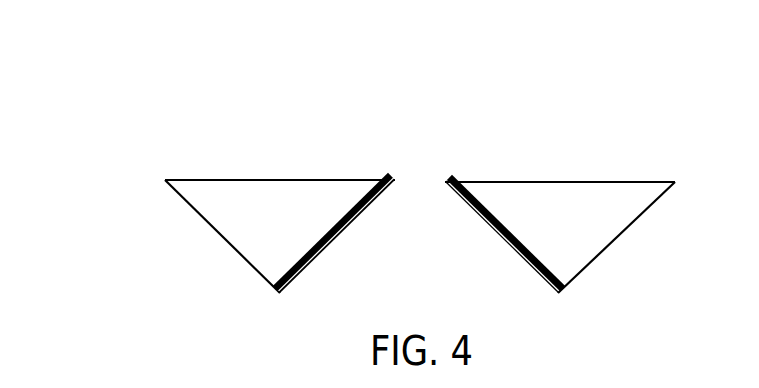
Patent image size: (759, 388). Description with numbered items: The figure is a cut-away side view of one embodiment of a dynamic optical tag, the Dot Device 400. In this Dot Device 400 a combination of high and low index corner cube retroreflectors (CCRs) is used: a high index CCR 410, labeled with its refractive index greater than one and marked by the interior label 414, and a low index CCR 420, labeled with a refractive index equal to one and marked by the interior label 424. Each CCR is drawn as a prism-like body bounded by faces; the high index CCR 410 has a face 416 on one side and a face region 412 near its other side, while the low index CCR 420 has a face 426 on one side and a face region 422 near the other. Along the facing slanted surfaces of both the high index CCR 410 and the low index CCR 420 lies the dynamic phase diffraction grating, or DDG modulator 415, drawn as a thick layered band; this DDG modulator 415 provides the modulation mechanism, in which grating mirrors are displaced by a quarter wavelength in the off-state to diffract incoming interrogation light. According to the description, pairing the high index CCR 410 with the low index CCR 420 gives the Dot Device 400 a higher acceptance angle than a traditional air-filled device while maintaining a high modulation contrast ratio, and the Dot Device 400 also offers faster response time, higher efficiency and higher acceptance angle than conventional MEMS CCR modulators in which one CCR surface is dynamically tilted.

The Dot Device 400 is at (114, 59).
The high index CCR 410 is at (248, 180).
The first prism body / hypotenuse region 412 is at (313, 218).
The first prism label 414 is at (293, 236).
The DDG modulator 415 is at (355, 227).
The first prism entrance face 416 is at (238, 248).
The low index CCR 420 is at (553, 182).
The second prism exit face region 422 is at (602, 218).
The second prism label 424 is at (578, 236).
The second prism exit face 426 is at (613, 240).